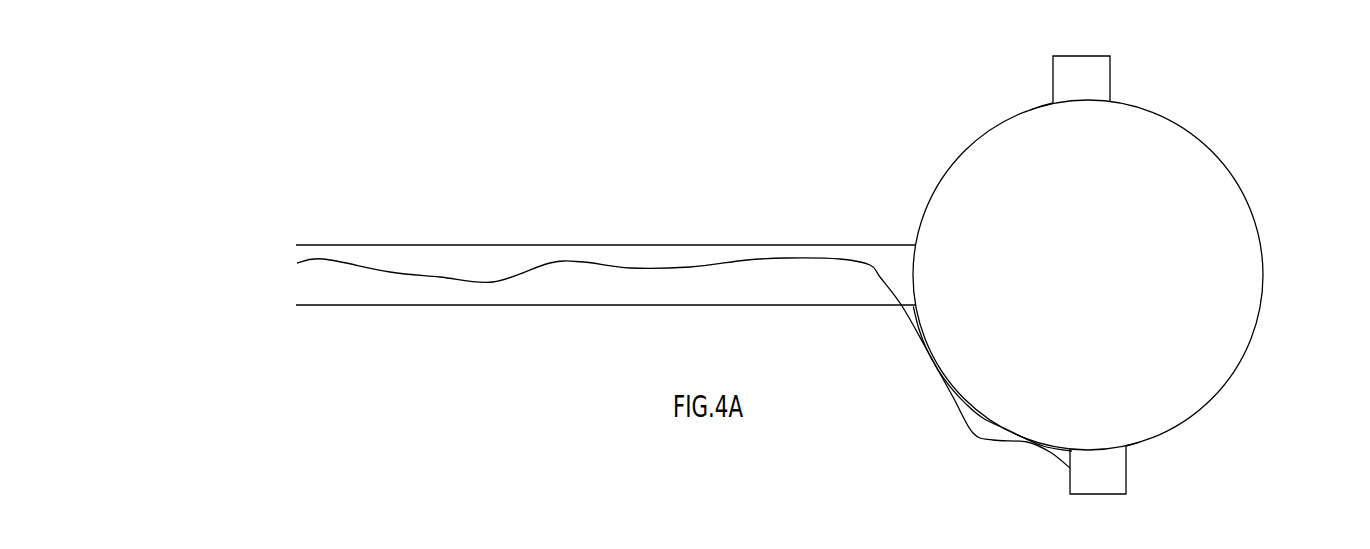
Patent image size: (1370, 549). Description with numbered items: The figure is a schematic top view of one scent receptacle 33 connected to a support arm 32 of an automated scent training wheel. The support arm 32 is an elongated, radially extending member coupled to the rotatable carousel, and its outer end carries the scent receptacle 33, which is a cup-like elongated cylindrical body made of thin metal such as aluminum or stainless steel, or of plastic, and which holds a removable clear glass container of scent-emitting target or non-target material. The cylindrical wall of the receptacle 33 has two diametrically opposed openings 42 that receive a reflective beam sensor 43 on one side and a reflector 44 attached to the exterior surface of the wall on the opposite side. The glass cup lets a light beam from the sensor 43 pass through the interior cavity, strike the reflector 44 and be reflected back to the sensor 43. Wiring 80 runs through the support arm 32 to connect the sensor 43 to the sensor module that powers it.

The support arm 32 is at (778, 305).
The scent receptacle 33 is at (1212, 150).
The openings 42 is at (1018, 89).
The reflective beam sensor 43 is at (1128, 470).
The reflector 44 is at (1097, 83).
The wiring 80 is at (708, 263).